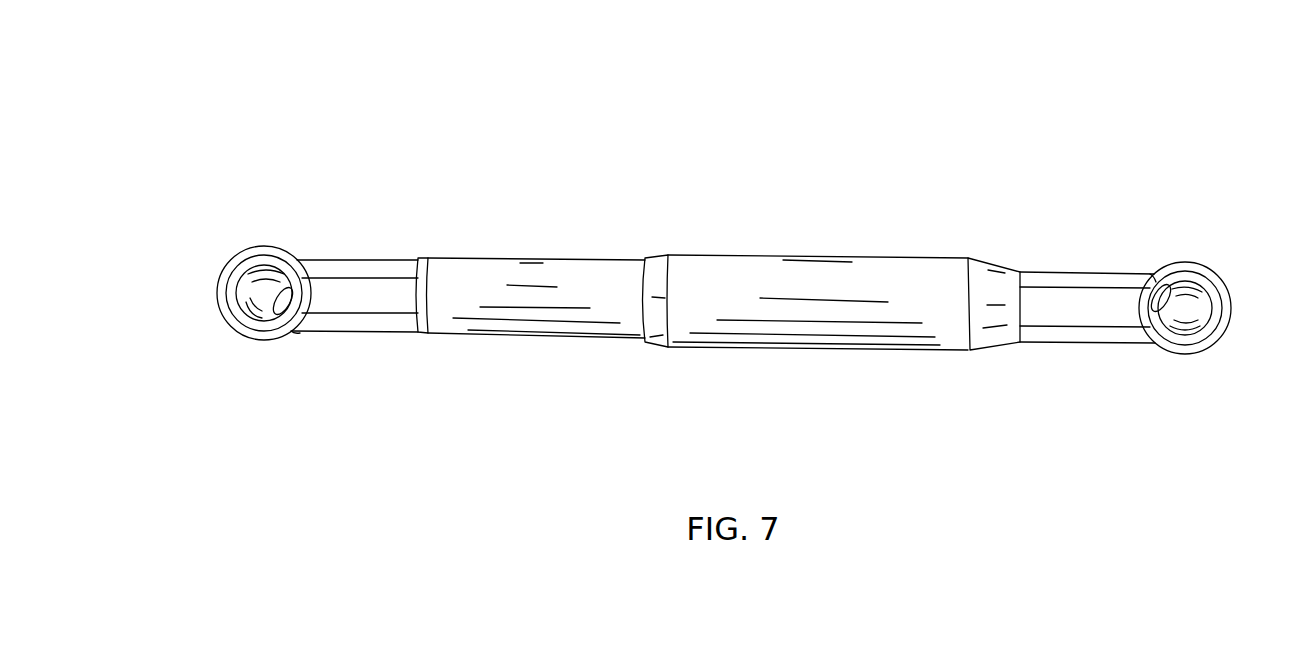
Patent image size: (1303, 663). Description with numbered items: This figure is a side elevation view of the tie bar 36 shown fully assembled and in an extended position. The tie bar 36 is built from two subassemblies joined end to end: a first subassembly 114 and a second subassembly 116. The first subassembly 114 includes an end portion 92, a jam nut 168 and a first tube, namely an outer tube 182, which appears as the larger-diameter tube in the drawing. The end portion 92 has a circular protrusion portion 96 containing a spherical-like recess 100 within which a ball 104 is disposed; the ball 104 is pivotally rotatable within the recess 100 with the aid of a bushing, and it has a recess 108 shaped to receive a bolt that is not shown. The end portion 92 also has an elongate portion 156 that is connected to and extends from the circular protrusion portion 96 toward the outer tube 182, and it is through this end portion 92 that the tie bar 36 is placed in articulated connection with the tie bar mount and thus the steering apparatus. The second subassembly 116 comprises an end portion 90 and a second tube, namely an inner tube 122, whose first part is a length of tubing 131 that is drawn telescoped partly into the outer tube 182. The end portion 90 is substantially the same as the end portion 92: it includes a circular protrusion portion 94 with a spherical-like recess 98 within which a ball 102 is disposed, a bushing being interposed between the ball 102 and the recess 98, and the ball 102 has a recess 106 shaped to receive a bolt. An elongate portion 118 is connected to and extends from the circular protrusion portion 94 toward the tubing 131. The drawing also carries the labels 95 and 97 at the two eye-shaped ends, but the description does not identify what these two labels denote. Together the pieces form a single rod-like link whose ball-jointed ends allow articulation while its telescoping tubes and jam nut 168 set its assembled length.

The tie bar 36 is at (790, 120).
The end portion 90 is at (270, 409).
The end portion 92 is at (1181, 406).
The circular protrusion portion 94 is at (218, 283).
The first eye 95 is at (268, 246).
The circular protrusion portion 96 is at (1226, 309).
The second eye 97 is at (1178, 263).
The spherical-like recess 98 is at (240, 268).
The spherical-like recess 100 is at (1207, 310).
The ball 102 is at (267, 294).
The ball 104 is at (1187, 320).
The recess 106 is at (293, 310).
The recess 108 is at (1150, 293).
The first subassembly 114 is at (896, 386).
The second subassembly 116 is at (512, 365).
The elongate portion 118 is at (387, 270).
The inner tube 122 is at (595, 240).
The tubing 131 is at (508, 258).
The elongate portion 156 is at (1090, 278).
The jam nut 168 is at (1003, 266).
The outer tube 182 is at (862, 258).